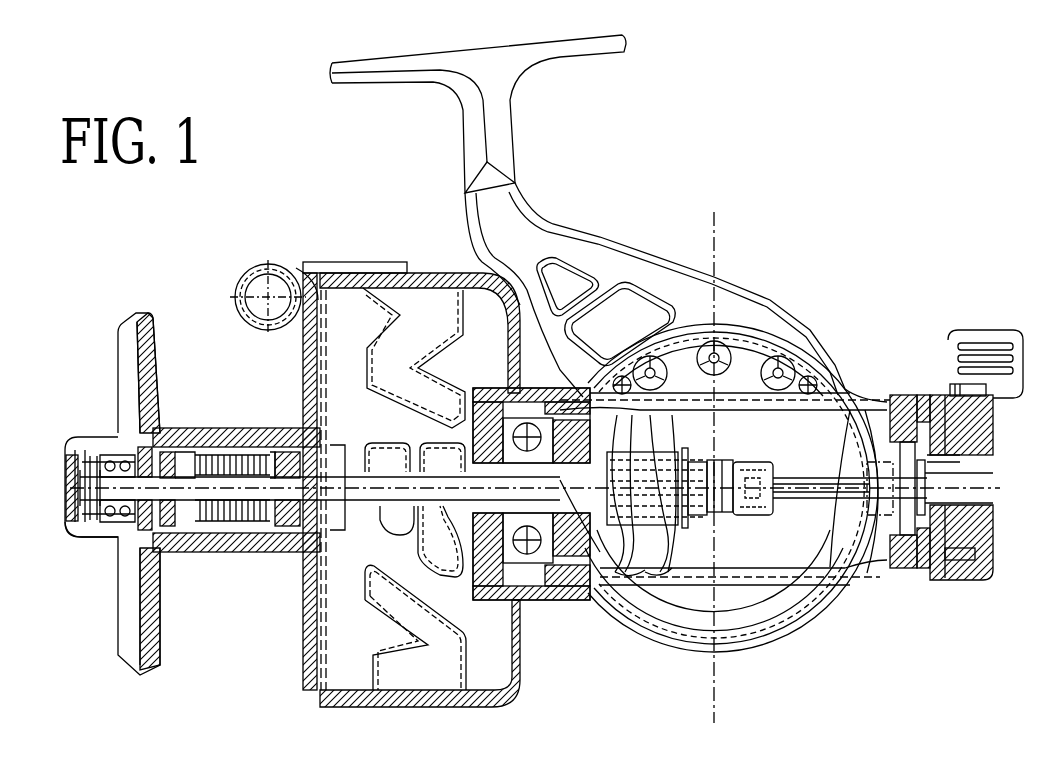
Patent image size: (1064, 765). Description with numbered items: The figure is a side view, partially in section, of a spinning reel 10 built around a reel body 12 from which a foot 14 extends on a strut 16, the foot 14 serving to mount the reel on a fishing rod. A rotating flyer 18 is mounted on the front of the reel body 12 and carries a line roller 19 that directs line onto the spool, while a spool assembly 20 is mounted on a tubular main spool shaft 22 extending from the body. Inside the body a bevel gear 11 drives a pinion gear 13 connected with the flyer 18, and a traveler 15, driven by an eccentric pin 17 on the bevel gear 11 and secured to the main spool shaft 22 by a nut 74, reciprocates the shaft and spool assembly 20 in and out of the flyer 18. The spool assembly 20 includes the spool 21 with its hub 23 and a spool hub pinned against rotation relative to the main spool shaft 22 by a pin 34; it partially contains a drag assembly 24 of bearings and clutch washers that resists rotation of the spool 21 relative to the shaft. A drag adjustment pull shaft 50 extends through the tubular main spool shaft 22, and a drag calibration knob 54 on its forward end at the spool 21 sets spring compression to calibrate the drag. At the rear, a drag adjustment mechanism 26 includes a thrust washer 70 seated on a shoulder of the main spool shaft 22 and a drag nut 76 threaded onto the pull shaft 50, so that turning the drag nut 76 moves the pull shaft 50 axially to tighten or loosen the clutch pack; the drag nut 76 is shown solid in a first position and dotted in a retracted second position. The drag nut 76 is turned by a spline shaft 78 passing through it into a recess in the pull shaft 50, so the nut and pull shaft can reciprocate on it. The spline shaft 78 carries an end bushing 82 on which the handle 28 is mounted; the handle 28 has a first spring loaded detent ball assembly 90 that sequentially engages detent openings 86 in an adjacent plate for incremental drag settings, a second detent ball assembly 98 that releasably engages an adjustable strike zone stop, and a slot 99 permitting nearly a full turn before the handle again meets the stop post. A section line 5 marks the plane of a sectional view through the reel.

The section line 5- 5 is at (697, 238).
The spinning reel 10 is at (371, 212).
The bevel gear 11 is at (598, 555).
The reel body 12 is at (801, 635).
The pinion gear 13 is at (585, 585).
The foot 14 is at (572, 74).
The traveler 15 is at (668, 553).
The strut 16 is at (545, 218).
The eccentric pin 17 is at (637, 553).
The rotating flyer 18 is at (447, 277).
The line roller 19 is at (248, 262).
The spool assembly 20 is at (121, 314).
The spool 21 is at (140, 450).
The tubular main spool shaft 22 is at (350, 455).
The hub of the spool 23 is at (228, 432).
The drag assembly 24 is at (240, 547).
The drag adjustment mechanism 26 is at (1015, 474).
The handle 28 is at (978, 332).
The pin 34 is at (338, 517).
The drag adjustment pull shaft 50 is at (188, 490).
The drag calibration knob 54 is at (97, 540).
The thrust washer 70 is at (735, 460).
The nut 74 is at (690, 458).
The drag nut 76 is at (855, 398).
The spline shaft 78 is at (797, 478).
The end bushing 82 is at (993, 492).
The detent openings 86 is at (942, 415).
The first spring loaded detent ball assembly 90 is at (943, 568).
The second detent ball assembly 98 is at (945, 395).
The slot 99 is at (965, 565).